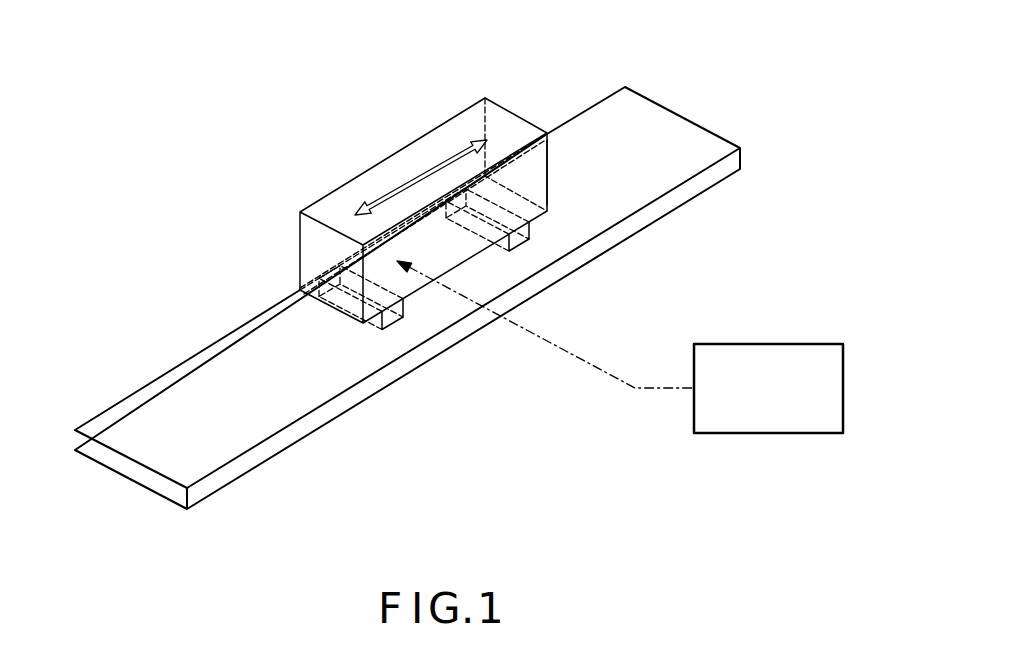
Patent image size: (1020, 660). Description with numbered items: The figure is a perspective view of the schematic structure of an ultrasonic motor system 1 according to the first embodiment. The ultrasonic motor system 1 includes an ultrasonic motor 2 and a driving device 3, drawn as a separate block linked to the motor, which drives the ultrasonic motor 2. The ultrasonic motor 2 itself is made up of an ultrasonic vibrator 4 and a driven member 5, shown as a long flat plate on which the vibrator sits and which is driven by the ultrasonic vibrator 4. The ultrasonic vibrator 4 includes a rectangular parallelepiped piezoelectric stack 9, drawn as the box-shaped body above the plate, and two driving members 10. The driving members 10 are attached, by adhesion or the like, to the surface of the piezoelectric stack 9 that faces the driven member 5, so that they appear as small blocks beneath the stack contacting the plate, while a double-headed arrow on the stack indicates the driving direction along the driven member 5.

The ultrasonic motor system 1 is at (572, 471).
The ultrasonic motor 2 is at (584, 70).
The driving device 3 is at (758, 433).
The ultrasonic vibrator 4 is at (447, 138).
The driven member 5 is at (203, 490).
The piezoelectric stack 9 is at (549, 152).
The driving member 10 is at (381, 332).